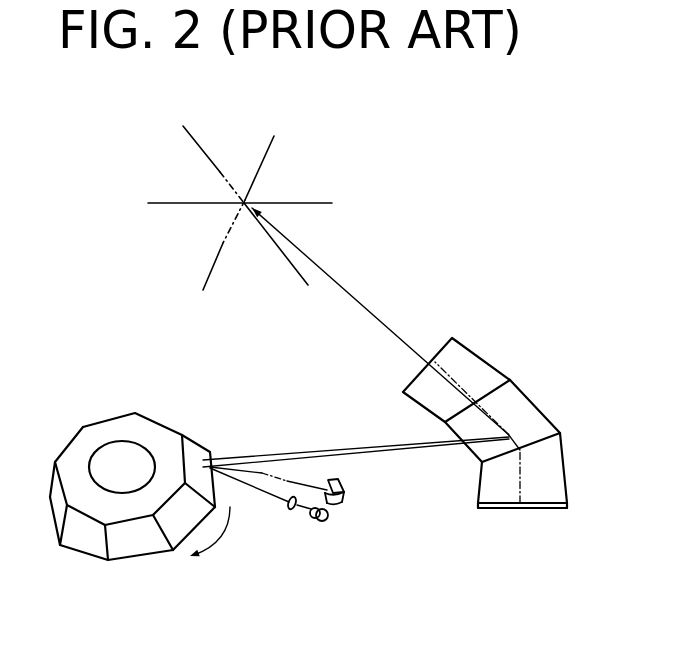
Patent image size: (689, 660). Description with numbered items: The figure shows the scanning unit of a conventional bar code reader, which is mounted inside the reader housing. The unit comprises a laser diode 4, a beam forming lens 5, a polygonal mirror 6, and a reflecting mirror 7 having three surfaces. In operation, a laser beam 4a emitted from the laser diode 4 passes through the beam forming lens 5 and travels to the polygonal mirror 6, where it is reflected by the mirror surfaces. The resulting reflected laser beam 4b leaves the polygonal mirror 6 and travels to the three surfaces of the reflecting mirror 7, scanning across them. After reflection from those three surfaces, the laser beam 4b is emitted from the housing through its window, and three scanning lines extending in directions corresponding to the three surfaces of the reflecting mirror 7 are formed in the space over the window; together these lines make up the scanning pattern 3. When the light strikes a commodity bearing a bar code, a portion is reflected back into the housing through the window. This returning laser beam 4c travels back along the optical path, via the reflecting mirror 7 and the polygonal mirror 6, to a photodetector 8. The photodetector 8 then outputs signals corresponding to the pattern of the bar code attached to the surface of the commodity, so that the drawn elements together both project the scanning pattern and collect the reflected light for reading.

The scanning pattern 3 is at (265, 153).
The laser diode 4 is at (326, 521).
The laser beam 4a is at (302, 509).
The reflected laser beam 4b is at (380, 455).
The laser beam 4c is at (303, 452).
The beam forming lens 5 is at (287, 511).
The polygonal mirror 6 is at (152, 542).
The reflecting mirror 7 is at (563, 430).
The photodetector 8 is at (343, 503).